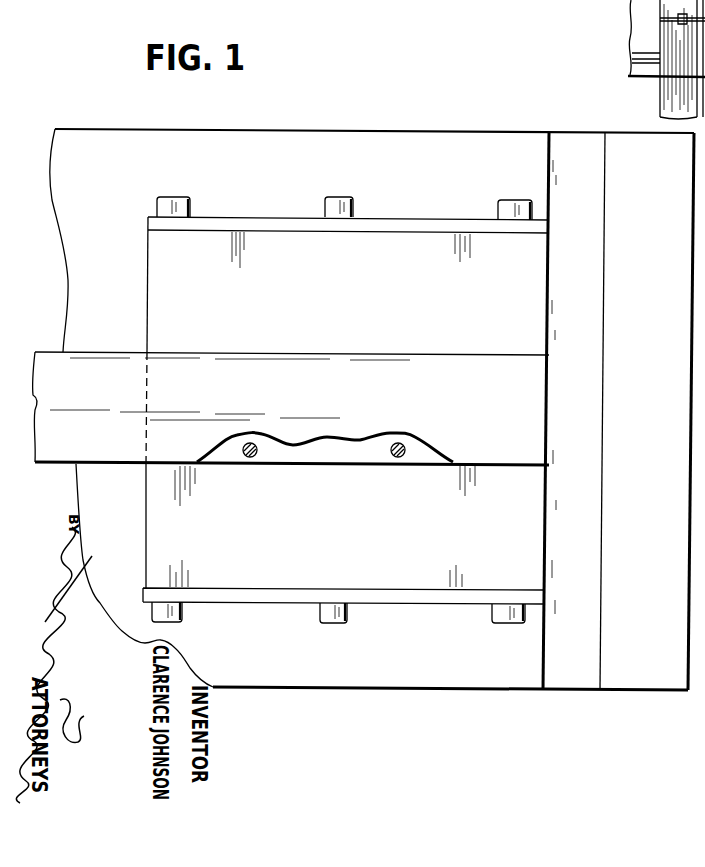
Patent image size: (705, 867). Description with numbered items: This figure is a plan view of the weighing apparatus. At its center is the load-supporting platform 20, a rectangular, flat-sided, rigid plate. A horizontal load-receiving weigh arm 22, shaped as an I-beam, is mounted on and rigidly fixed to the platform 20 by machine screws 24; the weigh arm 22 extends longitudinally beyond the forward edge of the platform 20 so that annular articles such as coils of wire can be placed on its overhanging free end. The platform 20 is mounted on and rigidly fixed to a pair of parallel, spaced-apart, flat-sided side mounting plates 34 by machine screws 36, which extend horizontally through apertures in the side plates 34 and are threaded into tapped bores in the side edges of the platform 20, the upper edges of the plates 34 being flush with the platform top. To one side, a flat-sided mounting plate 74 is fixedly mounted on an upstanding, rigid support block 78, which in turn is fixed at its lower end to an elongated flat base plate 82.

The load-supporting platform 20 is at (325, 302).
The load-receiving weigh arm 22 is at (123, 352).
The machine screws 24 is at (391, 450).
The side mounting plates 34 is at (277, 217).
The machine screws 36 is at (180, 197).
The mounting plate 74 is at (572, 135).
The support block 78 is at (642, 142).
The base plate 82 is at (389, 131).